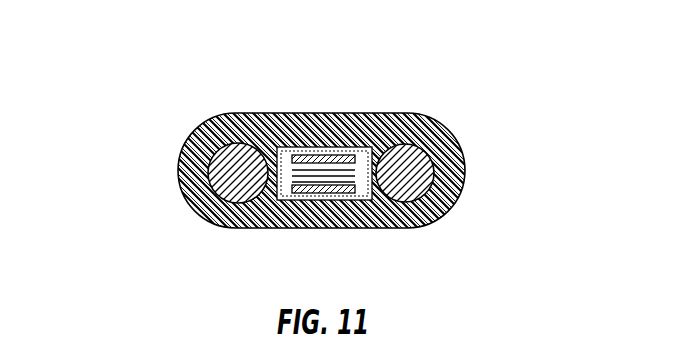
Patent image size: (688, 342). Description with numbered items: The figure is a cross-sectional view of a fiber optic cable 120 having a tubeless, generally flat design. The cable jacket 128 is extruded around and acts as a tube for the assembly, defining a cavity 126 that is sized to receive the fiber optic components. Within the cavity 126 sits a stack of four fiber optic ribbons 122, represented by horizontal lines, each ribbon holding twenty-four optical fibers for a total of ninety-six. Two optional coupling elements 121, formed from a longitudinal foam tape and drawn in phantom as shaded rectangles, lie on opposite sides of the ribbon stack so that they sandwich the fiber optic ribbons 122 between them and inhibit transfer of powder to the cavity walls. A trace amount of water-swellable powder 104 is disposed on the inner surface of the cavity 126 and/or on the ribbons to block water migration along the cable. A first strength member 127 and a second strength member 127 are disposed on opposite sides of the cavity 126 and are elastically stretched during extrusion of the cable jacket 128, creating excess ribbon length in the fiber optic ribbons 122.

The fiber optic cable 120 is at (104, 122).
The water-swellable powder 104 is at (318, 203).
The coupling elements 121 is at (305, 158).
The fiber optic ribbons 122 is at (328, 170).
The cavity 126 is at (295, 148).
The strength members 127 is at (222, 180).
The cable jacket 128 is at (222, 222).